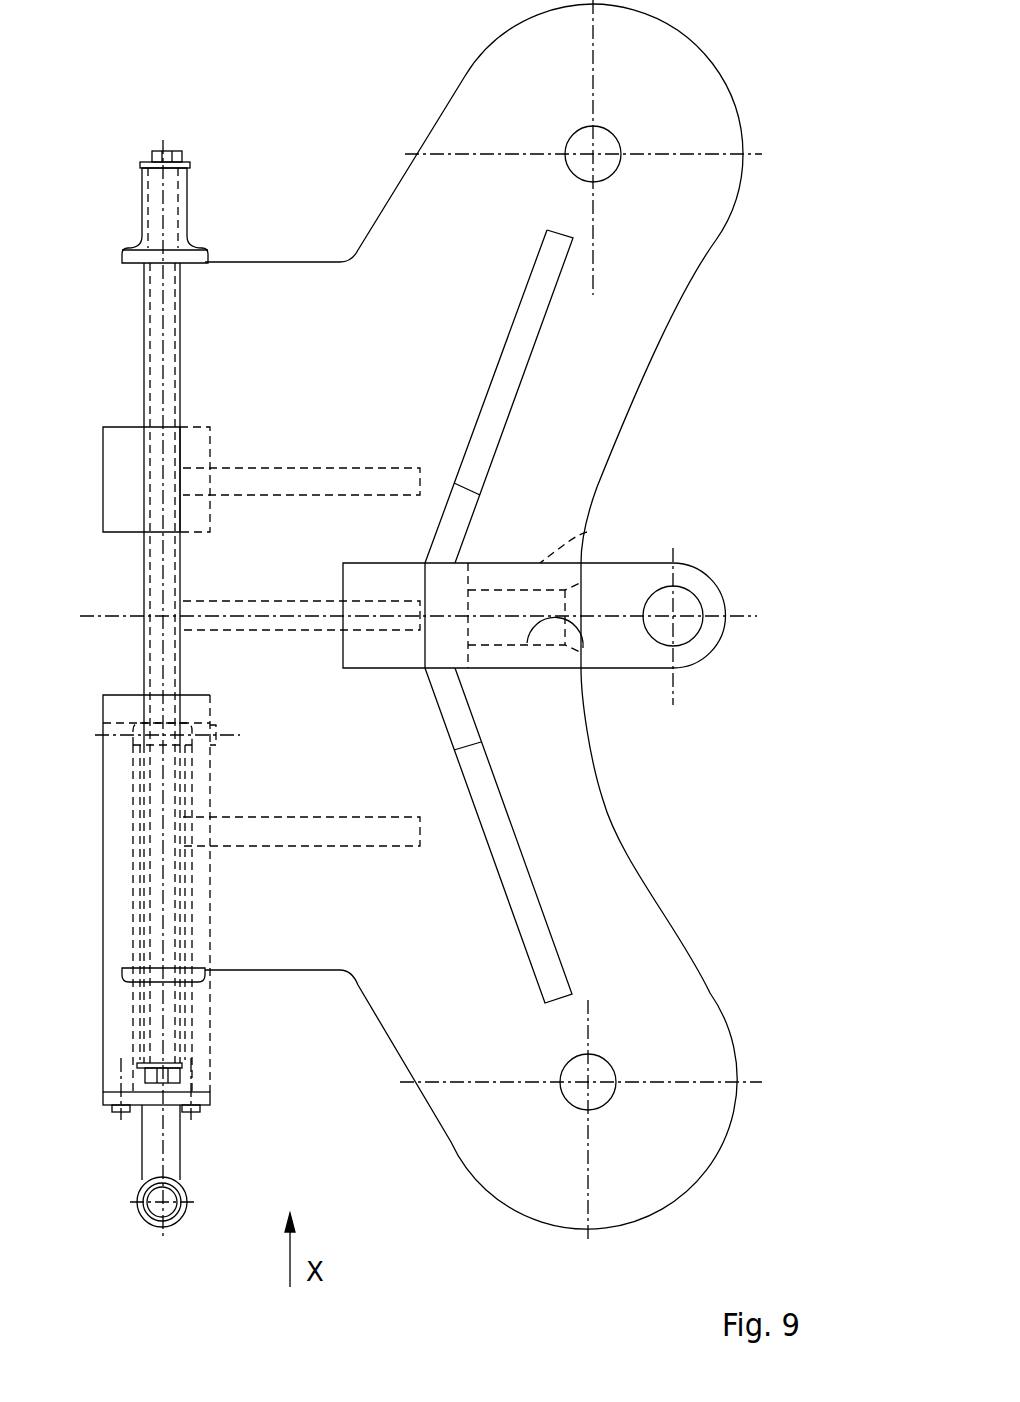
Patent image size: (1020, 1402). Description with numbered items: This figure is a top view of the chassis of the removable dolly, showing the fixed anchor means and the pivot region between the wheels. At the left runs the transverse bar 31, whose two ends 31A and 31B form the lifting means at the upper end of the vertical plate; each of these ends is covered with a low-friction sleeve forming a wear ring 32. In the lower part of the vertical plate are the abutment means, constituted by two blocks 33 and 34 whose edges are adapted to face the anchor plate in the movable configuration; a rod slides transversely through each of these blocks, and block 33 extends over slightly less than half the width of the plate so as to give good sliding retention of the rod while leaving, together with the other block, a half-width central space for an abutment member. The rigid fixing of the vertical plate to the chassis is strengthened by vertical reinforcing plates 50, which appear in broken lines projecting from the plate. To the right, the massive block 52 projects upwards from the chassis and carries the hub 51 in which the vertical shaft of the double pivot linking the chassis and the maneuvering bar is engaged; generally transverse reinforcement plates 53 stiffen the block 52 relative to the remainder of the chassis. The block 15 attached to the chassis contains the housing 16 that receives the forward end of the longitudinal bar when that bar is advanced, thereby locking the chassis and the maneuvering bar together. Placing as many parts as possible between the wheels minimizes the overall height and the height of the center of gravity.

The block 15 is at (587, 532).
The housing 16 is at (583, 648).
The transverse bar 31 is at (180, 338).
The end of transverse bar 31A is at (173, 183).
The end of transverse bar 31B is at (172, 1040).
The wear rings 32 is at (190, 226).
The block 33 is at (200, 769).
The block 34 is at (193, 426).
The vertical reinforcing plates 50 is at (350, 467).
The hub 51 is at (707, 573).
The massive block 52 is at (508, 563).
The transverse reinforcement plates 53 is at (545, 322).